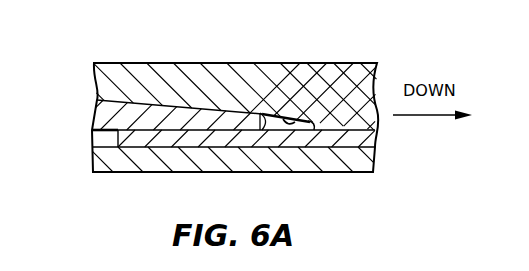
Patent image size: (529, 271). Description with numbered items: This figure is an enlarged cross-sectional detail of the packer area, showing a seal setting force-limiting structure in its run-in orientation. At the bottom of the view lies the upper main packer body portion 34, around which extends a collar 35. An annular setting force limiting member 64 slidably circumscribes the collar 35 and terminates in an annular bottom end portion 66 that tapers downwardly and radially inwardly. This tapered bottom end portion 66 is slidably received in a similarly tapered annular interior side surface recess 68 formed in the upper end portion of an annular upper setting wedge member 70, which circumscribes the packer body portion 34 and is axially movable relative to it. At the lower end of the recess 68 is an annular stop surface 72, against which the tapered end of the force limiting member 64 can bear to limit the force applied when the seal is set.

The setting force limiting member 64 is at (86, 106).
The upper setting wedge member 70 is at (154, 62).
The stop surface 72 is at (308, 123).
The bottom end portion 66 is at (210, 117).
The interior side surface recess 68 is at (283, 117).
The collar 35 is at (148, 140).
The upper main packer body portion 34 is at (330, 160).